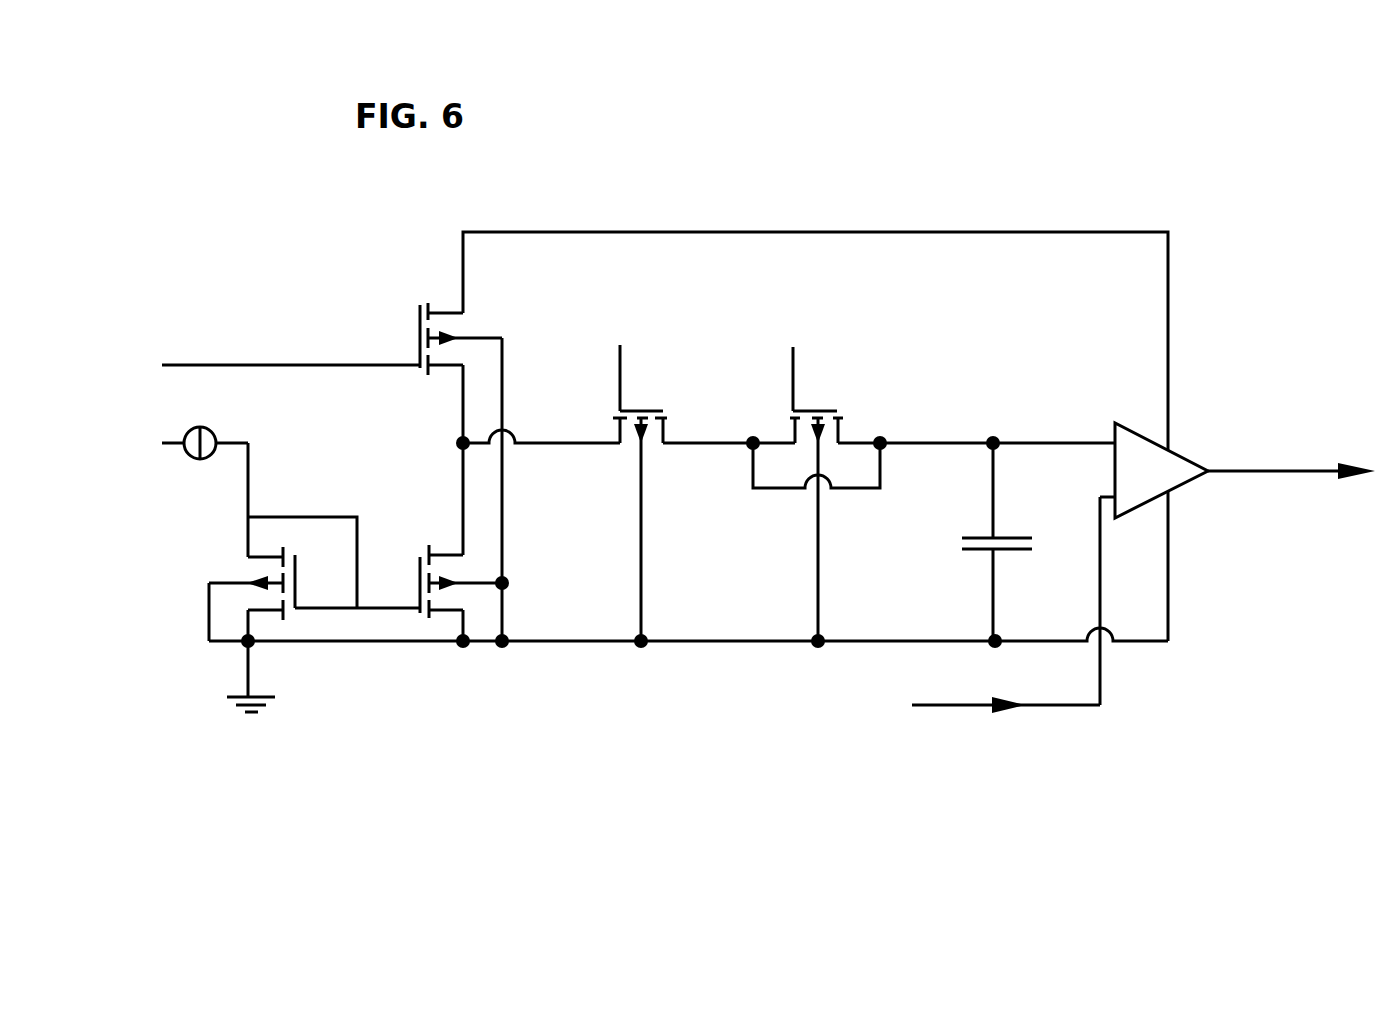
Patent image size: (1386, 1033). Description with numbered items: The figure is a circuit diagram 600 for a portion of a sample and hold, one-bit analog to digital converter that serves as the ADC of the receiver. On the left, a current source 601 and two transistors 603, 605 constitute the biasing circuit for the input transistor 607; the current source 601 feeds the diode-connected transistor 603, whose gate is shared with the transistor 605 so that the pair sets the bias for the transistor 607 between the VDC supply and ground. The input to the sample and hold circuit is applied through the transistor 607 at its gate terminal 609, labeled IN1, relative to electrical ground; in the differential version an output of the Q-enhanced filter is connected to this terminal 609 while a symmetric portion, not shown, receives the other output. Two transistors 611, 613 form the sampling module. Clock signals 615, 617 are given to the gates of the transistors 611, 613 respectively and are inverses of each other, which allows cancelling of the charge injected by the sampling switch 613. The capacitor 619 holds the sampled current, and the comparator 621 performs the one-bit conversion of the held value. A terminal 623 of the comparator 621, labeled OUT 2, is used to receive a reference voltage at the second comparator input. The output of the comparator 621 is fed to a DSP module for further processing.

The circuit diagram 600 is at (1138, 179).
The current source 601 is at (184, 458).
The transistor 603 is at (272, 578).
The transistor 605 is at (440, 546).
The transistor 607 is at (415, 317).
The gate terminal 609 is at (272, 365).
The transistor 611 is at (645, 410).
The transistor 613 is at (827, 405).
The clock signal 615 is at (617, 345).
The clock signal 617 is at (791, 357).
The capacitor 619 is at (963, 539).
The comparator 621 is at (1137, 427).
The terminal 623 is at (947, 707).